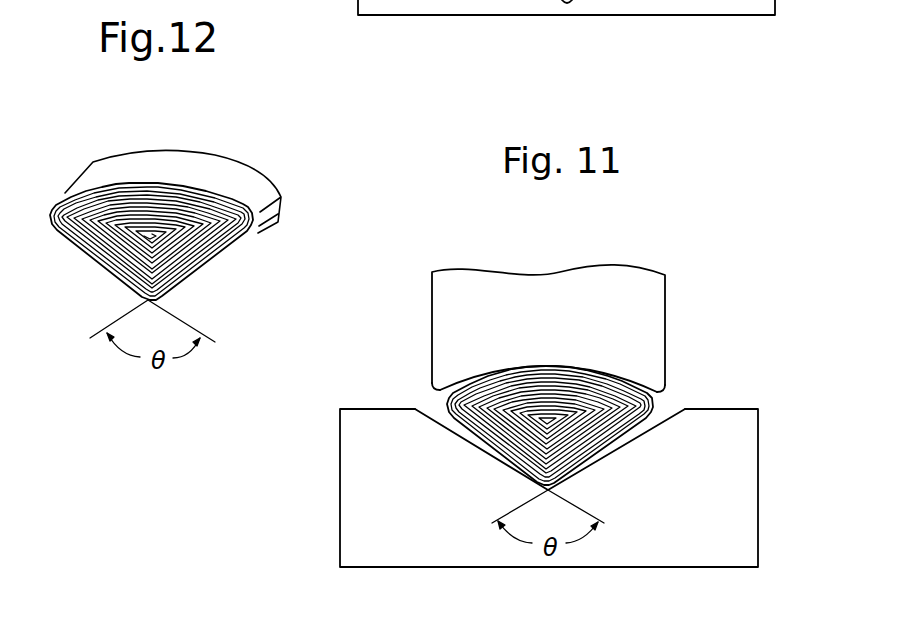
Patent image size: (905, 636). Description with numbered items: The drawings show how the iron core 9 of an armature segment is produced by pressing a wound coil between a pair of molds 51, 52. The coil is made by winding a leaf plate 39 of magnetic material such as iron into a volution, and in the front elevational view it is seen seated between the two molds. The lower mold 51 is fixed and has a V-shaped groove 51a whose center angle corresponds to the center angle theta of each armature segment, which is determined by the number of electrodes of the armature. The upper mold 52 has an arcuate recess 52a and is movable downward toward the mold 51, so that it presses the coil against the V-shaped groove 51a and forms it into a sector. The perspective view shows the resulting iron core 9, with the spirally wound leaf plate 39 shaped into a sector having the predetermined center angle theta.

In FIG. 12, the iron core 9 is at (220, 158).
In FIG. 11, the iron core 9 is at (440, 398).
In FIG. 12, the leaf plate 39 is at (98, 252).
In FIG. 11, the leaf plate 39 is at (448, 413).
In FIG. 11, the mold 51 is at (717, 407).
In FIG. 11, the V-shaped groove 51a is at (673, 417).
In FIG. 11, the mold 52 is at (667, 290).
In FIG. 11, the arcuate recess 52a is at (602, 378).